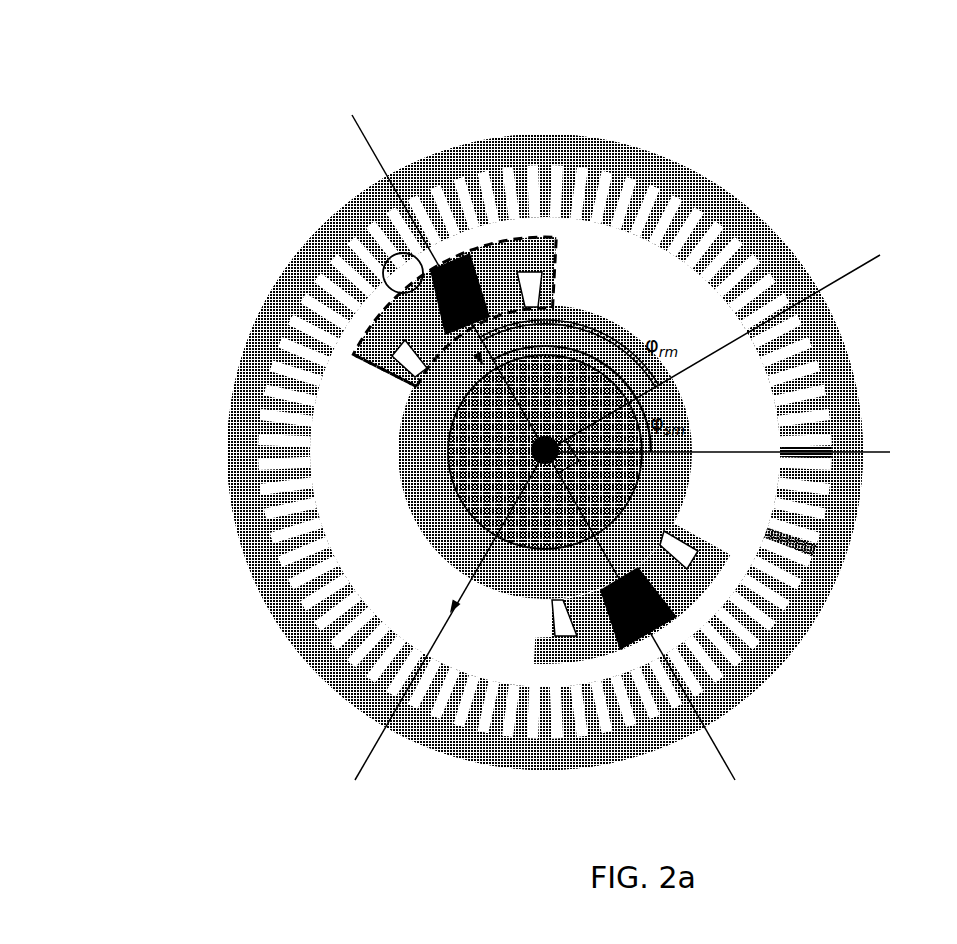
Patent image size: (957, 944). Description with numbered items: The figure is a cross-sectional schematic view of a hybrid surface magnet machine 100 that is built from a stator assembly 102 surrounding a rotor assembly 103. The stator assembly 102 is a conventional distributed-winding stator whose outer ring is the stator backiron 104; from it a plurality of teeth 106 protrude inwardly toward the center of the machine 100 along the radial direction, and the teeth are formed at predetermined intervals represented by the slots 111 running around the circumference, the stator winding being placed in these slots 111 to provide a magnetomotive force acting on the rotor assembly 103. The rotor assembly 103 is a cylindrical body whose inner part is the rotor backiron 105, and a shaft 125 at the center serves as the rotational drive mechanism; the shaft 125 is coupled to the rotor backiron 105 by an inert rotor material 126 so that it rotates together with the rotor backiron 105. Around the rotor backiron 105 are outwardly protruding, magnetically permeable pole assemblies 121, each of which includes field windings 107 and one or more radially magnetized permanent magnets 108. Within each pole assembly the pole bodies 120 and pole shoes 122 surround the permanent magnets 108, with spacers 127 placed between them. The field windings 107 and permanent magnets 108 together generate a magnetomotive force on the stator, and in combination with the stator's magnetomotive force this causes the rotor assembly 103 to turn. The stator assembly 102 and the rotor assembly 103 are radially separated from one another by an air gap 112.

The hybrid surface magnet machine 100 is at (175, 150).
The stator assembly 102 is at (323, 688).
The rotor assembly 103 is at (603, 312).
The stator backiron 104 is at (775, 660).
The rotor backiron 105 is at (410, 445).
The teeth 106 is at (838, 475).
The field windings 107 is at (528, 262).
The permanent magnets 108 is at (463, 340).
The slots 111 is at (817, 561).
The air gap 112 is at (398, 266).
The pole bodies 120 is at (416, 322).
The pole assemblies 121 is at (372, 378).
The pole shoes 122 is at (382, 342).
The shaft 125 is at (551, 432).
The inert rotor material 126 is at (467, 483).
The spacers 127 is at (612, 636).